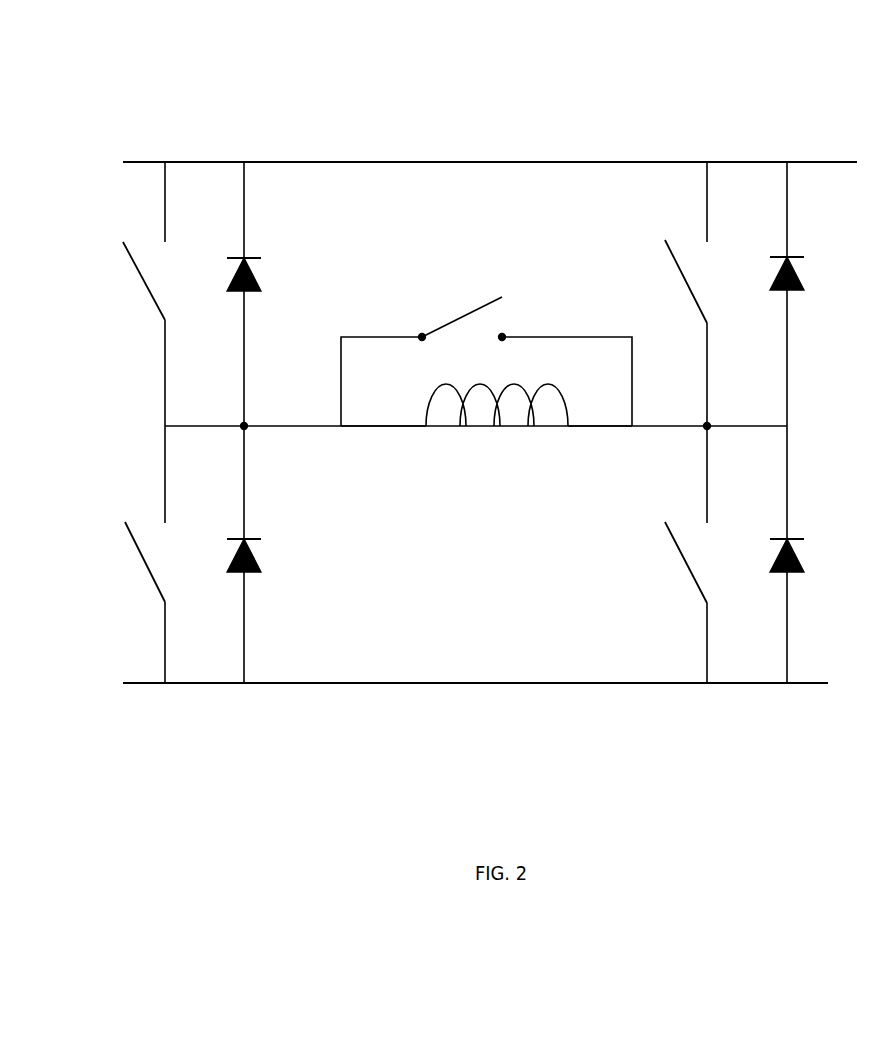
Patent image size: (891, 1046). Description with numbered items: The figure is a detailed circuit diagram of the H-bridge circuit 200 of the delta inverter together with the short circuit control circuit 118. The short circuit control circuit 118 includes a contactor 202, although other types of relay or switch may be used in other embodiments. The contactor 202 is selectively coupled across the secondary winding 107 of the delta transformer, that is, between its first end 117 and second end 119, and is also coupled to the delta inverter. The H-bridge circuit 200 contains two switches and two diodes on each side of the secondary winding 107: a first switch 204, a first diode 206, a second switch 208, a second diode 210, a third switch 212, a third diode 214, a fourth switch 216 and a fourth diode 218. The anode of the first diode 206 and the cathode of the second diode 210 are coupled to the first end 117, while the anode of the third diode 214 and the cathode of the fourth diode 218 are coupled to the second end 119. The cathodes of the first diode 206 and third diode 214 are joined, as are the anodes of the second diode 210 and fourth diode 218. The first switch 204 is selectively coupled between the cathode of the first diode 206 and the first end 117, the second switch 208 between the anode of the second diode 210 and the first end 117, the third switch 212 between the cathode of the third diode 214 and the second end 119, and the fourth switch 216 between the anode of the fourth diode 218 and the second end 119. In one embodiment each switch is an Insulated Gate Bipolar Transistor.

The H-bridge circuit 200 is at (100, 115).
The first switch (S1) 204 is at (148, 292).
The first diode 206 is at (260, 282).
The contactor (K1) 202 is at (452, 322).
The short circuit control circuit 118 is at (548, 276).
The secondary winding 107 is at (458, 415).
The first end 117 is at (425, 425).
The second end 119 is at (568, 425).
The third switch (S3) 212 is at (692, 295).
The third diode 214 is at (795, 292).
The second switch (S2) 208 is at (150, 578).
The second diode 210 is at (260, 563).
The fourth switch (S4) 216 is at (690, 575).
The fourth diode 218 is at (795, 575).